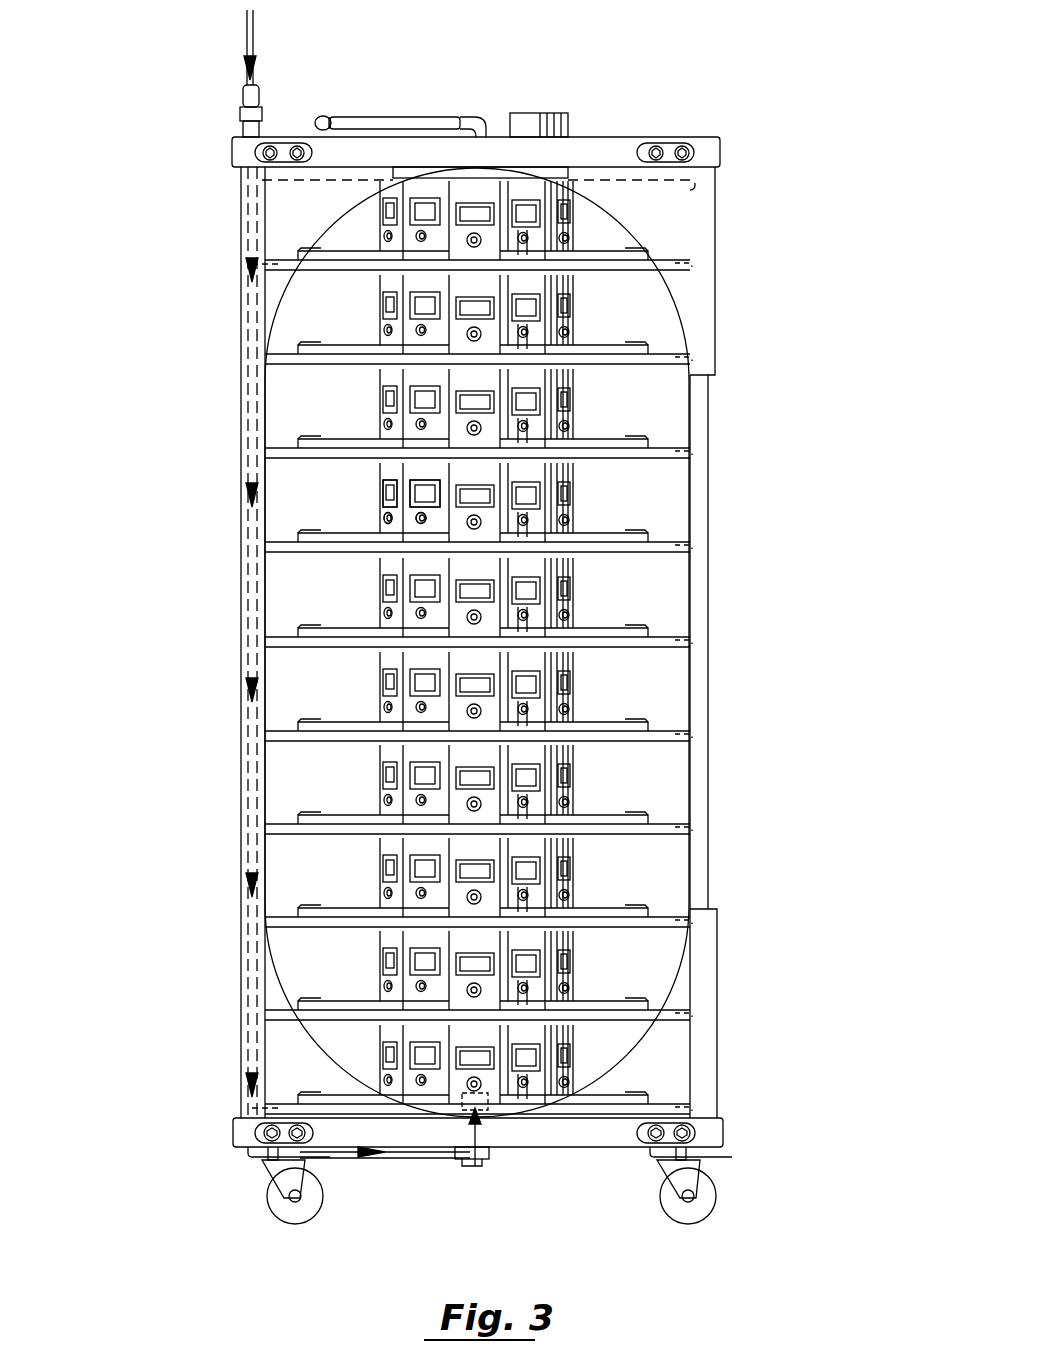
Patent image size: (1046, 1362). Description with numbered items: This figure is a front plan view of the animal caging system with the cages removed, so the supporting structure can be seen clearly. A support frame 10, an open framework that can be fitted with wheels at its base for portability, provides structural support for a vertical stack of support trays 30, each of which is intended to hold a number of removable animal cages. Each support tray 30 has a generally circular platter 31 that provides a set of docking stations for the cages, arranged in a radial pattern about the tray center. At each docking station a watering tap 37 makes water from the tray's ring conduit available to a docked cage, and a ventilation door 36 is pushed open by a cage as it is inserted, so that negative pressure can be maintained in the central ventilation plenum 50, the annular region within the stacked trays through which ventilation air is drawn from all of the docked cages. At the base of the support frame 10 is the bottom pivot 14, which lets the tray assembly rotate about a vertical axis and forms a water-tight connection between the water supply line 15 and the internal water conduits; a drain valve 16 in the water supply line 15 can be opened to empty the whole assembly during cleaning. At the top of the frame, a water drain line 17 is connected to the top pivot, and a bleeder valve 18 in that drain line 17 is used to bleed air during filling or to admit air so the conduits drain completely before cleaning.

The support frame 10 is at (728, 230).
The bottom pivot 14 is at (490, 1112).
The water supply line 15 is at (256, 40).
The drain valve 16 is at (477, 1170).
The water drain line 17 is at (424, 117).
The bleeder valve 18 is at (330, 116).
The support tray 30 is at (378, 346).
The platter 31 is at (282, 640).
The ventilation door 36 is at (418, 482).
The watering tap 37 is at (417, 513).
The central ventilation plenum 50 is at (548, 118).